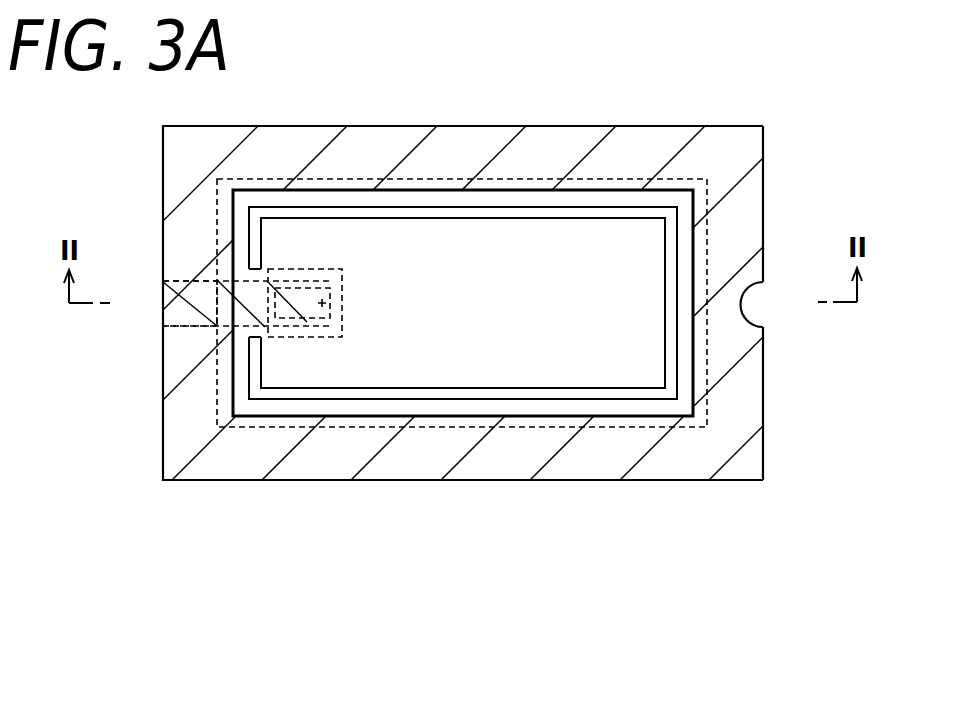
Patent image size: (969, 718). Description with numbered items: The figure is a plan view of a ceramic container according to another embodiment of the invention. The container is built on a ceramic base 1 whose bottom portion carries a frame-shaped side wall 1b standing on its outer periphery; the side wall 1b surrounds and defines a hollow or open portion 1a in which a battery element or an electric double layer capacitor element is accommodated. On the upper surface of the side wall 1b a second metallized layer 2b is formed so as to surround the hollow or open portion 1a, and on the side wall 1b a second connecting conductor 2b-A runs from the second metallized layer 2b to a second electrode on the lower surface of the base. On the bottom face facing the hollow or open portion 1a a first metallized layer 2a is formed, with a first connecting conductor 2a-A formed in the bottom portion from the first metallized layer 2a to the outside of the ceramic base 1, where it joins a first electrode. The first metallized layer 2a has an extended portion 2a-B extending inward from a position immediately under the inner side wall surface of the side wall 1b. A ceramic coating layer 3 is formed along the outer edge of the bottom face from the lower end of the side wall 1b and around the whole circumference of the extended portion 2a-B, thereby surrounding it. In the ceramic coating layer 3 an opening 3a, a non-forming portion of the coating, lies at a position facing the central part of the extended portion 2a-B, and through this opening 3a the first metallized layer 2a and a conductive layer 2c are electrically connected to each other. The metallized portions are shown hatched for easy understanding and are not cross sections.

The ceramic base 1 is at (753, 153).
The hollow or open portion 1a is at (482, 293).
The side wall 1b is at (763, 213).
The first metallized layer 2a is at (196, 278).
The first connecting conductor 2a-A is at (188, 295).
The extended portion 2a-B is at (272, 271).
The second metallized layer 2b is at (604, 145).
The second connecting conductor 2b-A is at (741, 310).
The conductive layer 2c is at (618, 362).
The ceramic coating layer 3 is at (440, 189).
The opening 3a is at (344, 302).